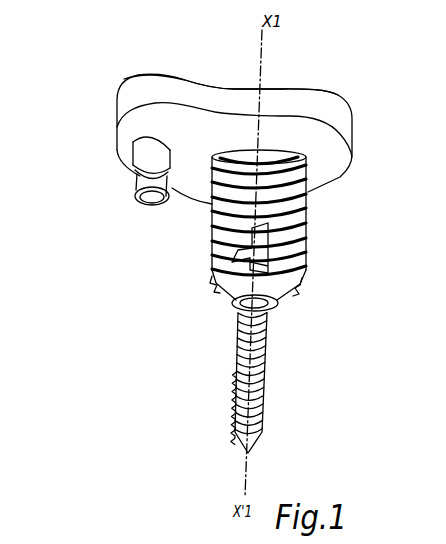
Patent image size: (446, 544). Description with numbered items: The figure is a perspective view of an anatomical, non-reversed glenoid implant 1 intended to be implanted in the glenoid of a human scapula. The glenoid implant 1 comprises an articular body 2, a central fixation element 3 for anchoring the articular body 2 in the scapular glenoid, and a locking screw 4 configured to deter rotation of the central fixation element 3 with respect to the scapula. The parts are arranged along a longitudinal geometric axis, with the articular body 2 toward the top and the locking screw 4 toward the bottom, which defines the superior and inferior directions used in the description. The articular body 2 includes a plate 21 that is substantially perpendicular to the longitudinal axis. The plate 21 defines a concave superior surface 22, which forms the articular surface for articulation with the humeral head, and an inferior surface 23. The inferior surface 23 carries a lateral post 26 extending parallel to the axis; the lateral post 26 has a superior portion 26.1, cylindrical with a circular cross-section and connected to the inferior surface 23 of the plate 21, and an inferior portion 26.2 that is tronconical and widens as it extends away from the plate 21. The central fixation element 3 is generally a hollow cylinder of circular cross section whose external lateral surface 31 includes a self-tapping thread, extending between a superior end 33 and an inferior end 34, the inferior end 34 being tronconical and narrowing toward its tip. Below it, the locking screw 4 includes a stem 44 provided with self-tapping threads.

The glenoid implant 1 is at (428, 251).
The articular body 2 is at (347, 180).
The plate 21 is at (337, 115).
The superior surface 22 is at (283, 83).
The inferior surface 23 is at (326, 150).
The lateral post 26 is at (67, 161).
The superior portion 26.1 is at (147, 152).
The inferior portion 26.2 is at (148, 202).
The central fixation element 3 is at (308, 262).
The external lateral surface 31 is at (310, 213).
The superior end 33 is at (217, 177).
The inferior end 34 is at (276, 297).
The locking screw 4 is at (283, 371).
The stem 44 is at (267, 388).